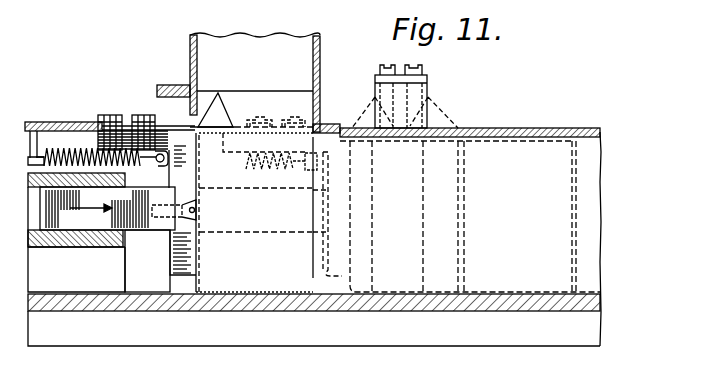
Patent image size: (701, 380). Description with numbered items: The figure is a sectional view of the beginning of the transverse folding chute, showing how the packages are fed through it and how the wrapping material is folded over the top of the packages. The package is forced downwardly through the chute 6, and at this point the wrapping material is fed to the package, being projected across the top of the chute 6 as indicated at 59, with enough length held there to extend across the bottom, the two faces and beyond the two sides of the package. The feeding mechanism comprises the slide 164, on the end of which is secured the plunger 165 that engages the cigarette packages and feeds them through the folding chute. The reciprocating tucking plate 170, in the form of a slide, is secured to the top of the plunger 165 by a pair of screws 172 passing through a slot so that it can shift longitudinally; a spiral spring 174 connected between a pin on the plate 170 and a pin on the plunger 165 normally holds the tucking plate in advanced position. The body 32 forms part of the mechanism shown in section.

The chute 6 is at (322, 63).
The valve body block 32 is at (262, 277).
The wrapping material 59 is at (310, 280).
The slide 164 is at (153, 225).
The plunger 165 is at (178, 265).
The tucking plate 170 is at (70, 123).
The screws 172 is at (142, 117).
The spiral spring 174 is at (80, 148).